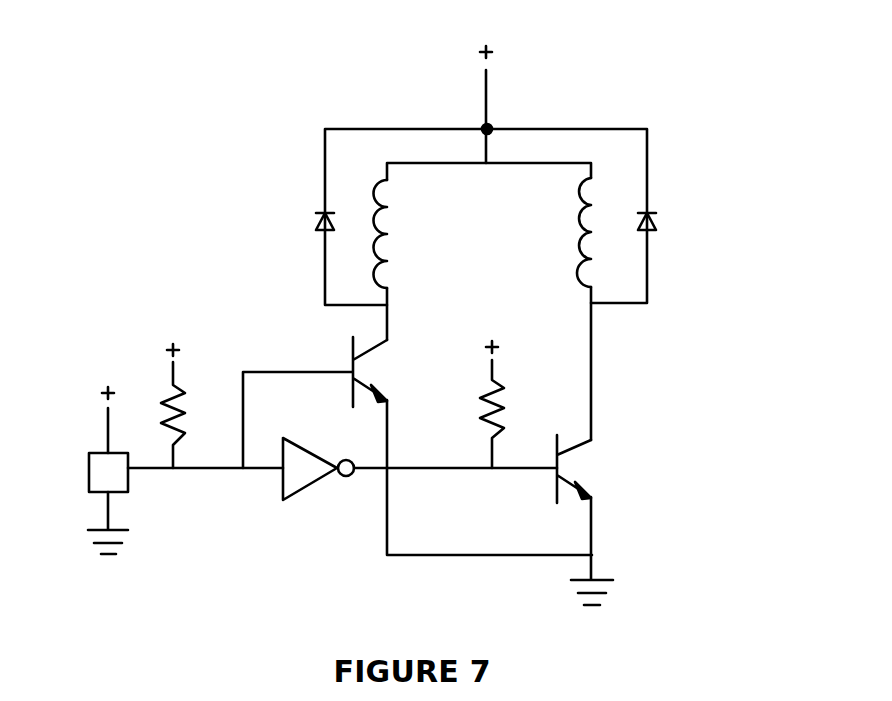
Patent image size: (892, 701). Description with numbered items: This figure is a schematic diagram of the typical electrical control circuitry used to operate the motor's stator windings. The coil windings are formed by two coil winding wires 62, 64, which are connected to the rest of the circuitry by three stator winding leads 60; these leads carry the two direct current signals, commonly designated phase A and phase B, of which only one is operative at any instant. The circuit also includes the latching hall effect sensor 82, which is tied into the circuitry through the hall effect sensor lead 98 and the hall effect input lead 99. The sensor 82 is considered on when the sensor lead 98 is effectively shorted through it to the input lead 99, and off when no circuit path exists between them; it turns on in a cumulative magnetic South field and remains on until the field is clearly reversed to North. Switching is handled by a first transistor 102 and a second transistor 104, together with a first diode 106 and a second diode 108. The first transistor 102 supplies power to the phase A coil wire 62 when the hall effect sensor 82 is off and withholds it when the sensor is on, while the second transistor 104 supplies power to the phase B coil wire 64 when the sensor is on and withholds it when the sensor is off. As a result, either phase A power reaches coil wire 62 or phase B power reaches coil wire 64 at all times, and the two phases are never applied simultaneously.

The stator winding leads 60 is at (387, 297).
The coil winding wire 62 is at (395, 230).
The coil winding wire 64 is at (573, 222).
The latching hall effect sensor 82 is at (98, 473).
The hall effect sensor lead 98 is at (200, 477).
The hall effect input lead 99 is at (102, 423).
The first transistor 102 is at (348, 370).
The second transistor 104 is at (577, 470).
The first diode 106 is at (310, 222).
The second diode 108 is at (660, 221).